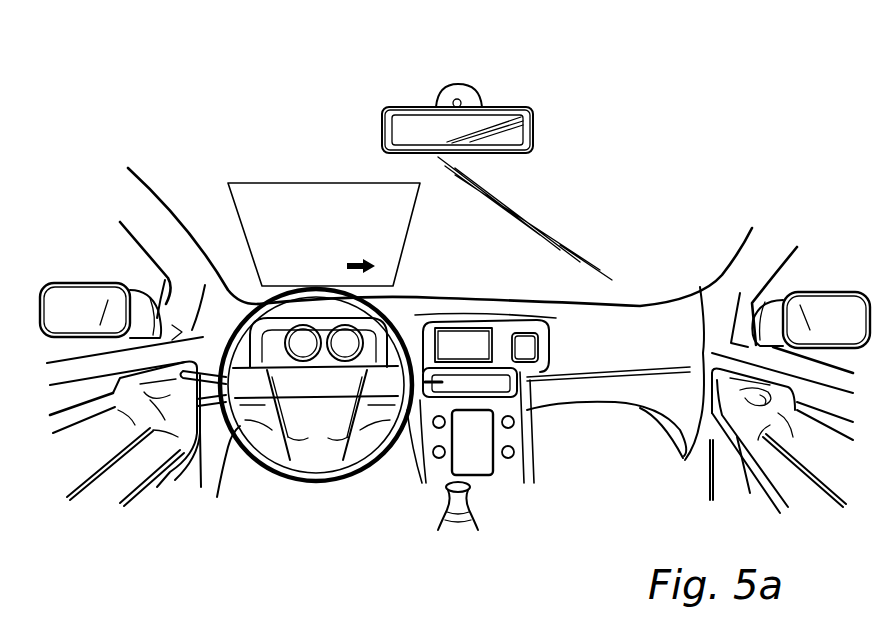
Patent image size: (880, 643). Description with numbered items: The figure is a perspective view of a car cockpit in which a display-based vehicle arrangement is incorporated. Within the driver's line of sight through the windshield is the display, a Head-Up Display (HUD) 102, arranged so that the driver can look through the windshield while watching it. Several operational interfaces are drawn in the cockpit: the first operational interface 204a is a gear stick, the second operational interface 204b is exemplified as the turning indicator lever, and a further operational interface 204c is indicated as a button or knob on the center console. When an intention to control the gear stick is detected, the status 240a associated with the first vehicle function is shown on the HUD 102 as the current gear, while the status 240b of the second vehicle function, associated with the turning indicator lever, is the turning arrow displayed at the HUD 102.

The Head-Up Display (HUD) 102 is at (254, 168).
The status of the first vehicle function 240a is at (284, 216).
The status of the second vehicle function 240b is at (360, 232).
The second operational interface 204b is at (434, 370).
The further operational interface 204c is at (514, 455).
The first operational interface 204a is at (472, 518).